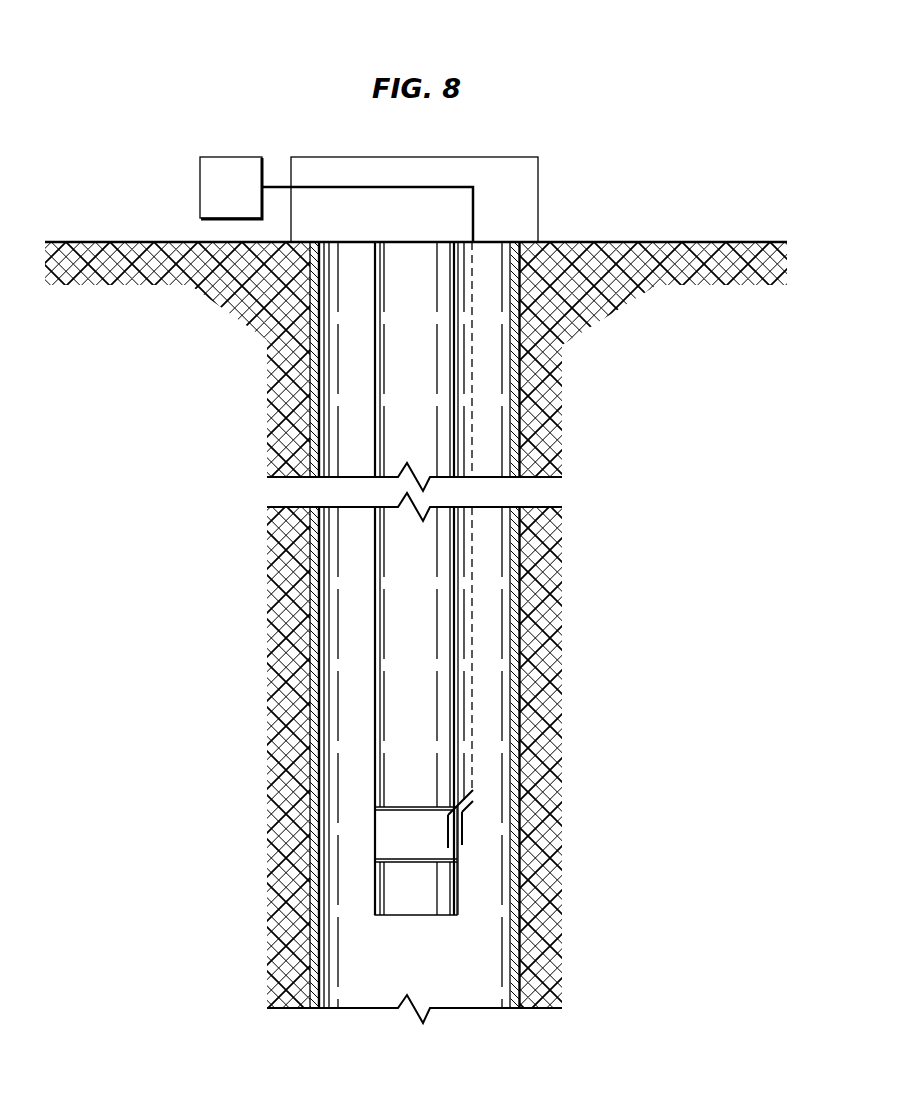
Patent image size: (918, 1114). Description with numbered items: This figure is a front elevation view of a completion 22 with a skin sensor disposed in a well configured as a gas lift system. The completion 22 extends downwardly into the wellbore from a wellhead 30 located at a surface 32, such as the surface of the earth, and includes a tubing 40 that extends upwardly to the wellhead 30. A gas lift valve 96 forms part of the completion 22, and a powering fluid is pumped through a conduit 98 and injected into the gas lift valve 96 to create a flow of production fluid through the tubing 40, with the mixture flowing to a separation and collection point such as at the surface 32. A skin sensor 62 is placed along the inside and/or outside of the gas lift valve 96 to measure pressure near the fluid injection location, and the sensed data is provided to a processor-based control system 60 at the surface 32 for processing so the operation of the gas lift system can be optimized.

The control system 60 is at (242, 198).
The wellhead 30 is at (539, 197).
The surface 32 is at (719, 242).
The completion 22 is at (483, 431).
The tubing 40 is at (390, 590).
The conduit 98 is at (467, 622).
The gas lift valve 96 is at (390, 823).
The skin sensor 62 is at (448, 841).